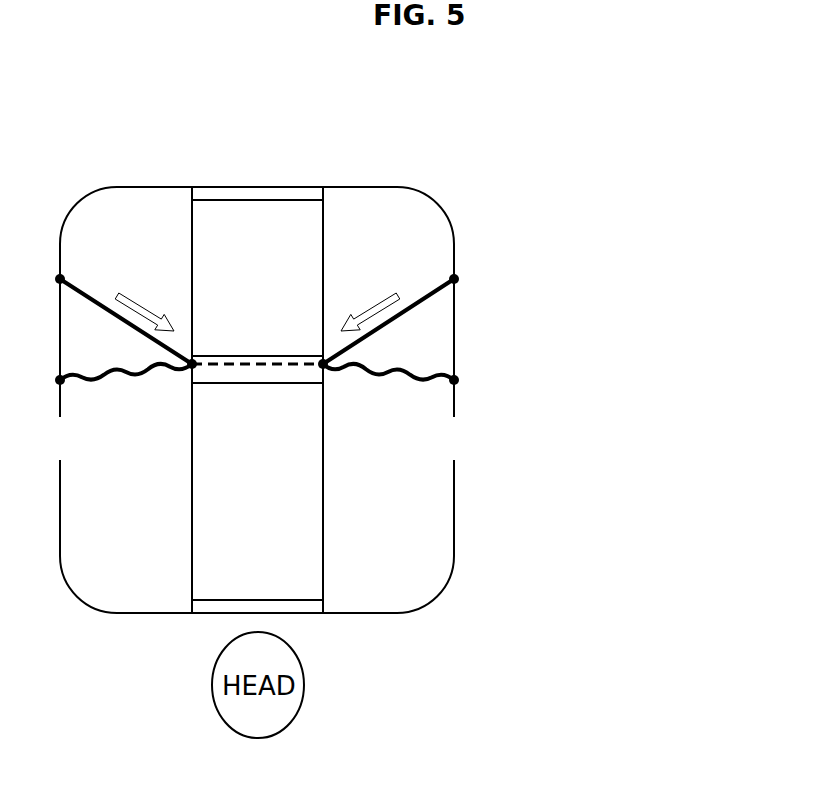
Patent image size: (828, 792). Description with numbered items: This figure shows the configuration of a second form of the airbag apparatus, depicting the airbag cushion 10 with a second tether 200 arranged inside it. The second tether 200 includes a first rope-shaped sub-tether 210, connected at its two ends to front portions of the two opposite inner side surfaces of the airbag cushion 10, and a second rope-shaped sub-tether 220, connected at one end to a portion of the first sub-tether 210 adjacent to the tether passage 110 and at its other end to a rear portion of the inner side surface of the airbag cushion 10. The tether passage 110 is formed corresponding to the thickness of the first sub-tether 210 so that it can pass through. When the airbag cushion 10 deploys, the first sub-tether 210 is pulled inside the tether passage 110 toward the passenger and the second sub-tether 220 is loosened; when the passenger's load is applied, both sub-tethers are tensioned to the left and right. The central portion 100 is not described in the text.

The airbag cushion 10 is at (470, 209).
The central support portion 100 is at (258, 235).
The tether passage 110 is at (298, 373).
The second tether 200 is at (369, 346).
The 2-1st tether 210 is at (402, 312).
The 2-2nd tether 220 is at (402, 380).